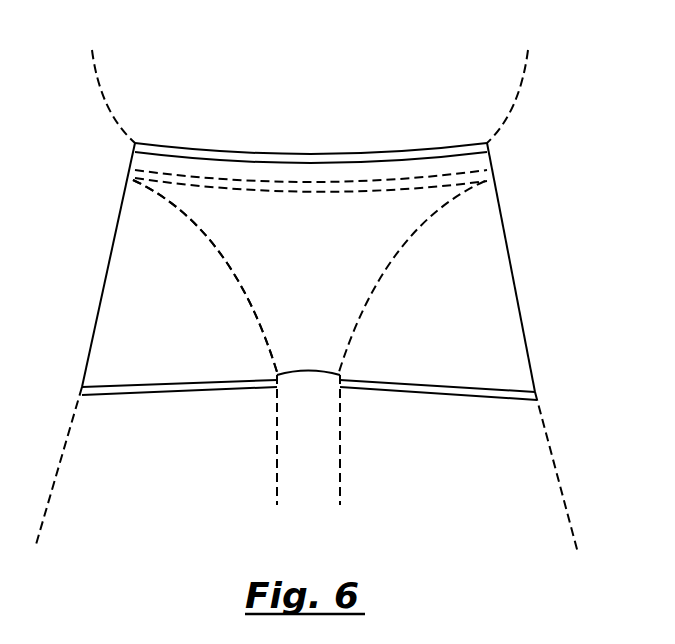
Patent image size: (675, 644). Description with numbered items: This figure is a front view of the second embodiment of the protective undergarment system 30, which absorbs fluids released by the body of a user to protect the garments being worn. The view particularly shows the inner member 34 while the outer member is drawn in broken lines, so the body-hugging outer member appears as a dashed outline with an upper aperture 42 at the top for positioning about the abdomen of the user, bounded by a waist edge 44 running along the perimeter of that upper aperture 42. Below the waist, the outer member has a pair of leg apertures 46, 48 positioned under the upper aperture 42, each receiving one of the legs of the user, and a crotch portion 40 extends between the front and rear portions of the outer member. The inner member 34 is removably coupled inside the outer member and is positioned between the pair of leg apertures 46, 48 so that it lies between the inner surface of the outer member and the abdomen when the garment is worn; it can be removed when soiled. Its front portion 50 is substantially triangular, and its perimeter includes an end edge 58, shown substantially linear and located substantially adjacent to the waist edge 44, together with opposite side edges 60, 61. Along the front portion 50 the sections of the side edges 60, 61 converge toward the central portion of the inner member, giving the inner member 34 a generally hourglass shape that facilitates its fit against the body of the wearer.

The protective undergarment system 30 is at (356, 111).
The inner member 34 is at (205, 232).
The upper aperture 42 is at (265, 147).
The waist edge 44 is at (362, 151).
The end edge 58 is at (455, 177).
The front portion 50 is at (238, 277).
The side edge 60 is at (263, 327).
The side edge 61 is at (362, 307).
The leg aperture 46 is at (196, 399).
The leg aperture 48 is at (443, 400).
The crotch portion 40 is at (311, 379).